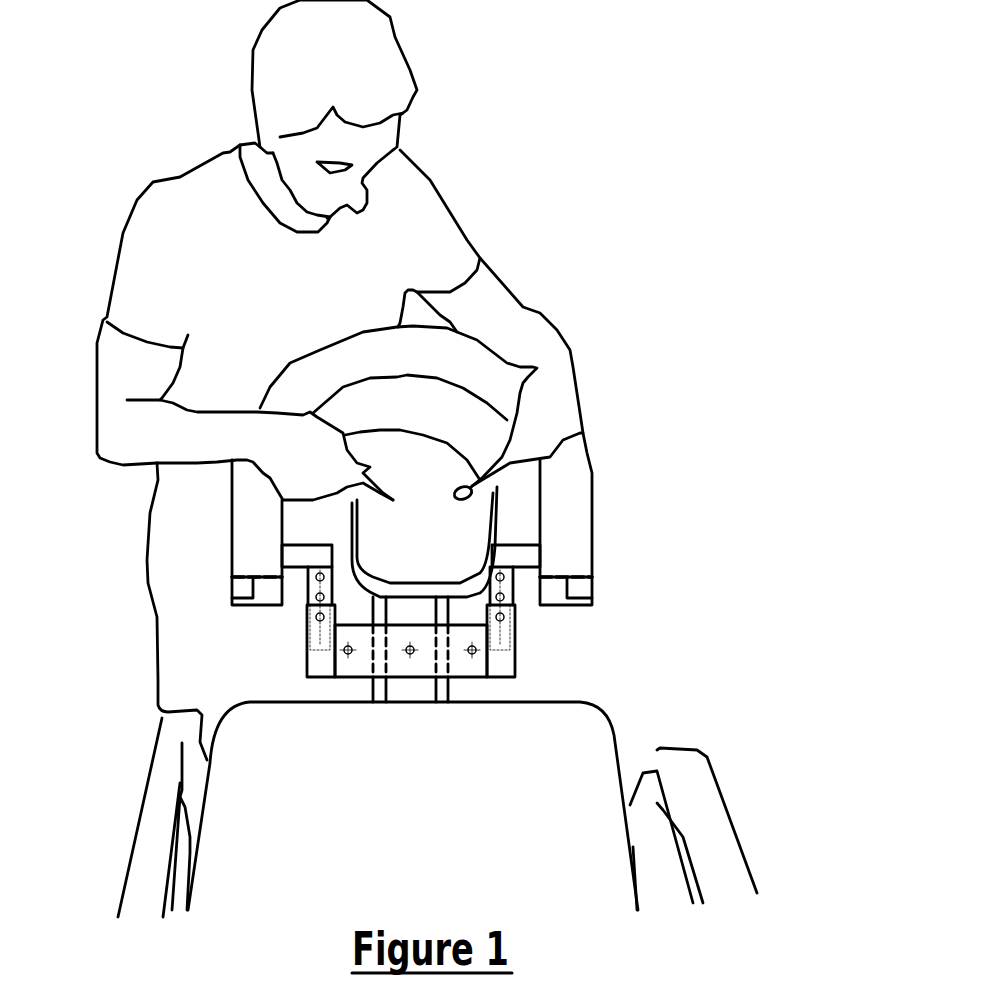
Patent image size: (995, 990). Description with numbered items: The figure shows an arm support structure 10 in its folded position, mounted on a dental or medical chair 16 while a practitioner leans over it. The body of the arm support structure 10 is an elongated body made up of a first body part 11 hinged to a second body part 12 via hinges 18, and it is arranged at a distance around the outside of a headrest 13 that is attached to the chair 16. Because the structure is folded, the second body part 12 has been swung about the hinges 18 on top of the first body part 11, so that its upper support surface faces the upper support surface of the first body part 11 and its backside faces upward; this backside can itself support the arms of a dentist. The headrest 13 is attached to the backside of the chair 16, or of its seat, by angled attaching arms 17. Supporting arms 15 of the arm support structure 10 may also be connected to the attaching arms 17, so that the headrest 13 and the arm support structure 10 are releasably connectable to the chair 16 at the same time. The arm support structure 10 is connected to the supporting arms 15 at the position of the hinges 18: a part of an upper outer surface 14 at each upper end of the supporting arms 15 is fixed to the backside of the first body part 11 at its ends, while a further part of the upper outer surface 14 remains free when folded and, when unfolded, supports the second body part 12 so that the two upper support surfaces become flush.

The arm support structure 10 is at (545, 190).
The first body part 11 is at (594, 533).
The second body part 12 is at (565, 510).
The headrest 13 is at (421, 547).
The upper outer surface 14 is at (267, 592).
The supporting arms 15 is at (312, 610).
The dental or medical chair 16 is at (530, 765).
The angled attaching arms 17 is at (442, 687).
The hinges 18 is at (230, 577).